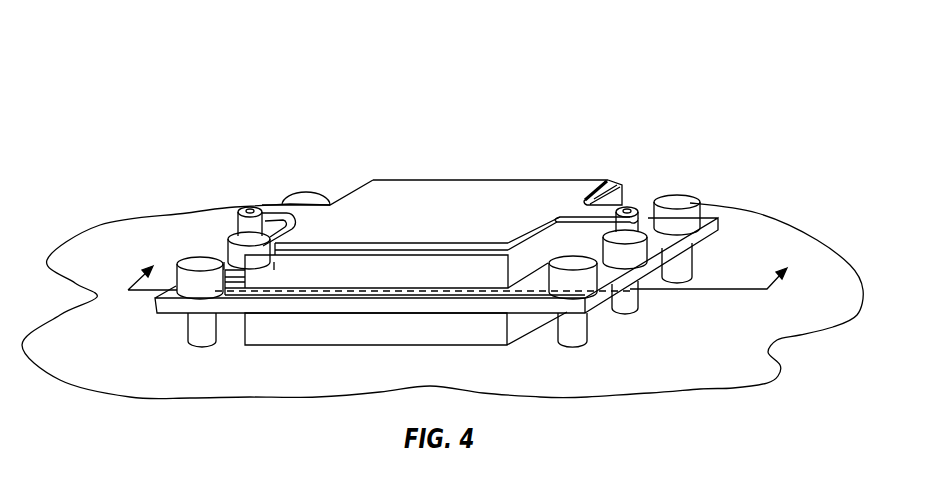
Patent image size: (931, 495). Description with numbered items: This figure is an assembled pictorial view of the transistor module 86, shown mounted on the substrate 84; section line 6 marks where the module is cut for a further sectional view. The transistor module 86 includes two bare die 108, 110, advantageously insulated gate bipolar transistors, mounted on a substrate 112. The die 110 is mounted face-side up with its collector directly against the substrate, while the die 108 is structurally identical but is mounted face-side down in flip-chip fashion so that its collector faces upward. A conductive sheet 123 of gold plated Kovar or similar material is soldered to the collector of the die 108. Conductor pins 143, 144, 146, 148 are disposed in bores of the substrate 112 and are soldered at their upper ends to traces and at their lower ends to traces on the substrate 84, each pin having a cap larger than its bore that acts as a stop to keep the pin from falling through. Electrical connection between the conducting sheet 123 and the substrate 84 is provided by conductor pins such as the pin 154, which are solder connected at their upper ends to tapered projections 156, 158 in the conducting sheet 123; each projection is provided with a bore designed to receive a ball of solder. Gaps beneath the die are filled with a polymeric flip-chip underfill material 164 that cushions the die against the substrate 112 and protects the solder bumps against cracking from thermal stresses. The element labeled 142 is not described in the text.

The substrate 84 is at (315, 393).
The transistor module 86 is at (288, 113).
The bare die 108 is at (616, 182).
The bare die 110 is at (520, 340).
The substrate 112 is at (597, 300).
The conductive sheet 123 is at (540, 178).
The left post 142 is at (228, 266).
The conductor pin 143 is at (183, 330).
The conductor pin 144 is at (593, 348).
The conductor pin 146 is at (311, 198).
The conductor pin 148 is at (693, 257).
The conductor pin 154 is at (640, 298).
The tapered projection 156 is at (266, 205).
The tapered projection 158 is at (629, 208).
The polymeric flip-chip underfill material 164 is at (320, 289).
The section line 6- 6 is at (467, 267).